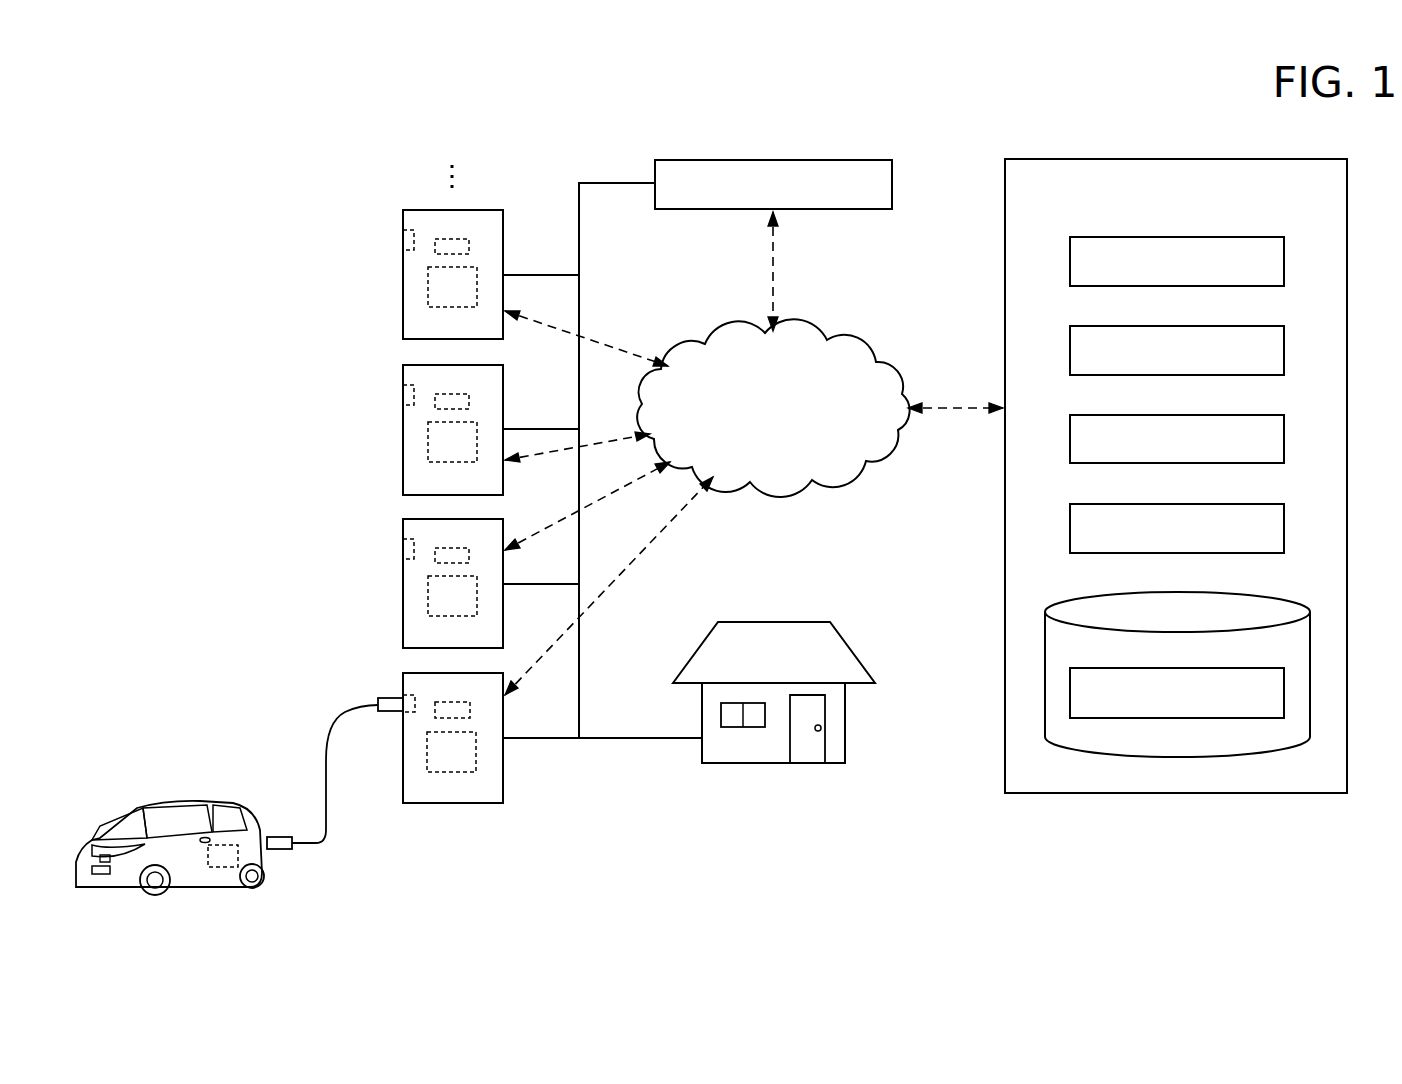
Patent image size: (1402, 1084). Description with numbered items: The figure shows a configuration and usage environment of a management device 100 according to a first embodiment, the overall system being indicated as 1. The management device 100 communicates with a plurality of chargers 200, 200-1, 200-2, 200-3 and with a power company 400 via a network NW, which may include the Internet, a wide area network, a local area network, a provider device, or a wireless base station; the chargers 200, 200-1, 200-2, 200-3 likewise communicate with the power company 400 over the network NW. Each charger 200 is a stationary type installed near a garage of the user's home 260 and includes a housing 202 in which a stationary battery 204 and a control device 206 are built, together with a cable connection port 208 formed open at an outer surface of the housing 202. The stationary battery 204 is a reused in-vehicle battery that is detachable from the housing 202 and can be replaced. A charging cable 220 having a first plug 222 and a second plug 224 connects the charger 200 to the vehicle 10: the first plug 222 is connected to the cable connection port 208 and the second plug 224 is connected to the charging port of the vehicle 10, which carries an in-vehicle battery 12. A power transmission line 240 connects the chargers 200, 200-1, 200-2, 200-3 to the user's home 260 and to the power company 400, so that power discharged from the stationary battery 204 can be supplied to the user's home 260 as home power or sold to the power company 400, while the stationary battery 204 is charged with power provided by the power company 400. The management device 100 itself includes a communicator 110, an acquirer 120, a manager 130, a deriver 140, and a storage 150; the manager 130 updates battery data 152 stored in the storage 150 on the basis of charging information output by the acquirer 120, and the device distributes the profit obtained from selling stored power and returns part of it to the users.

The battery management system 1 is at (233, 192).
The vehicle 10 is at (176, 800).
The in-vehicle battery 12 is at (227, 868).
The management device 100 is at (1271, 160).
The communicator 110 is at (1227, 237).
The acquirer 120 is at (1227, 326).
The manager 130 is at (1227, 415).
The deriver 140 is at (1227, 504).
The storage 150 is at (1247, 596).
The battery data 152 is at (1227, 668).
The charger 200 is at (455, 785).
The charger 200-1 is at (403, 584).
The charger 200-2 is at (403, 429).
The charger 200-3 is at (403, 275).
The housing 202 is at (483, 805).
The stationary battery 204 is at (452, 773).
The control device 206 is at (470, 705).
The cable connection port 208 is at (408, 714).
The charging cable 220 is at (327, 716).
The first plug 222 is at (393, 697).
The second plug 224 is at (280, 837).
The power transmission line 240 is at (581, 661).
The user's home 260 is at (773, 765).
The power company 400 is at (829, 161).
The network NW is at (838, 342).